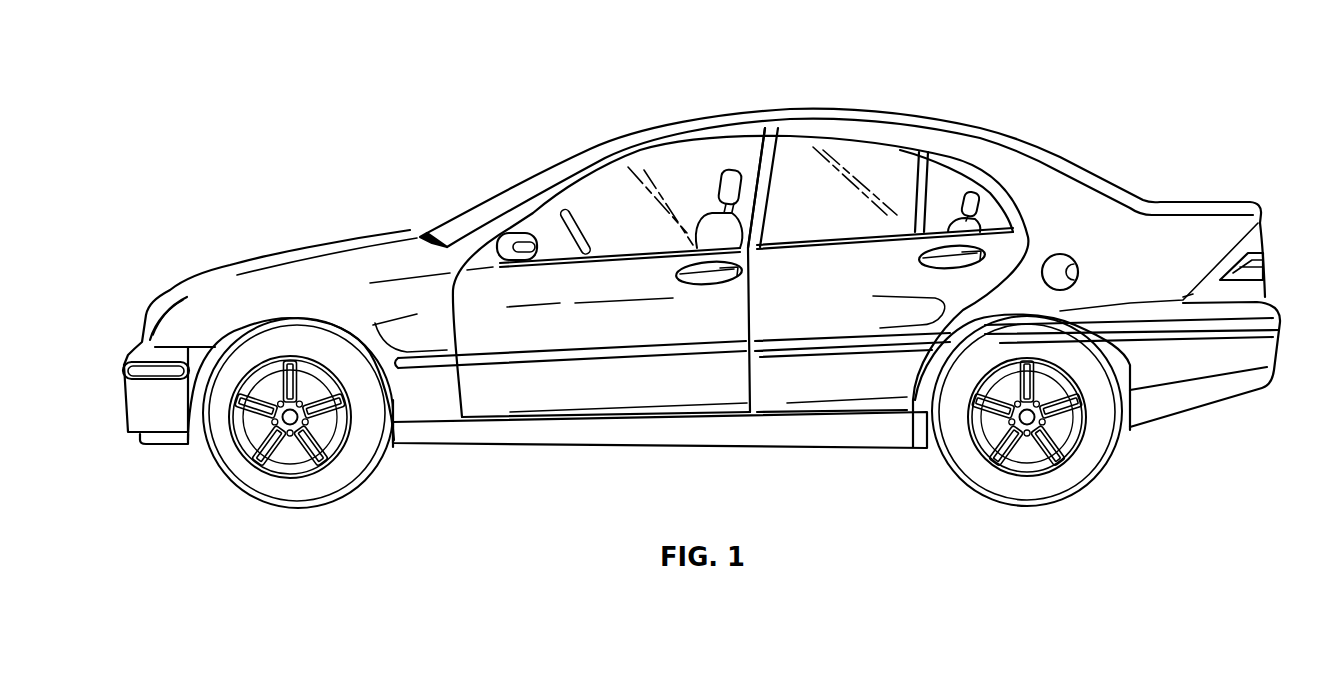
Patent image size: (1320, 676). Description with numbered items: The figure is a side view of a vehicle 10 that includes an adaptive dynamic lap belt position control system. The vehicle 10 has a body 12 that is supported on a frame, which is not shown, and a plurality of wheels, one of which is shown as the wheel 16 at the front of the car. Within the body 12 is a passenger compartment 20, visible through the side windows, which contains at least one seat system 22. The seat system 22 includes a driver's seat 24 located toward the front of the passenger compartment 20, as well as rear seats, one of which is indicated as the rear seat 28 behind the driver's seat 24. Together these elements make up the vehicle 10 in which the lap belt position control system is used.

The vehicle 10 is at (238, 120).
The body 12 is at (336, 226).
The wheel 16 is at (347, 452).
The passenger compartment 20 is at (595, 196).
The seat system 22 is at (708, 168).
The driver's seat 24 is at (745, 220).
The rear seat 28 is at (1000, 215).